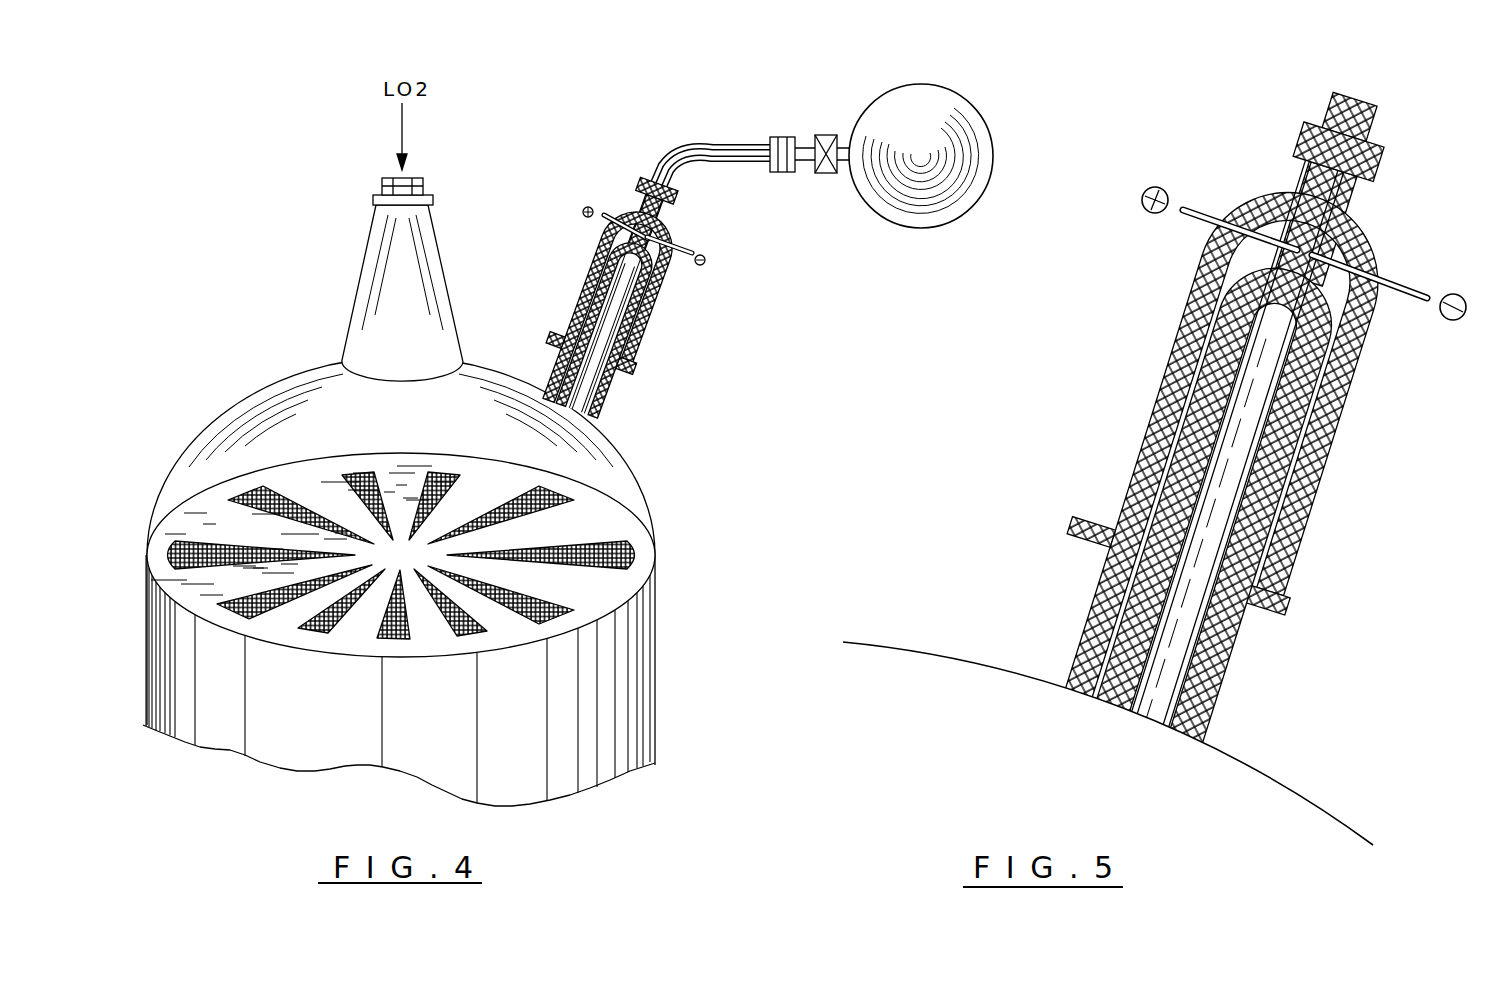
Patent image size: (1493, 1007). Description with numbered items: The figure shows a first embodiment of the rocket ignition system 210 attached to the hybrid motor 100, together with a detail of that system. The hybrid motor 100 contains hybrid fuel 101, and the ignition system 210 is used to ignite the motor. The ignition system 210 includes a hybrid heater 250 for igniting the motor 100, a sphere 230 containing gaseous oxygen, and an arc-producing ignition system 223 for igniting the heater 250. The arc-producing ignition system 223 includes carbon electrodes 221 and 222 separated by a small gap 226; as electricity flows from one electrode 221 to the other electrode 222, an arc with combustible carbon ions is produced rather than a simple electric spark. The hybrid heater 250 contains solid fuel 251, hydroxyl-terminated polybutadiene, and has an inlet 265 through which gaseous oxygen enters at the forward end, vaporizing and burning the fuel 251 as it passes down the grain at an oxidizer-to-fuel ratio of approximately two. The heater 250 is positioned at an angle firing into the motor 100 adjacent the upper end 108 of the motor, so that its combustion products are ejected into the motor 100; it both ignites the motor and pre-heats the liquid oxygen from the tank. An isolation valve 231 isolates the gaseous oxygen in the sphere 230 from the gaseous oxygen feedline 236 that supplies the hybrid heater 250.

In FIG. 4, the hybrid motor 100 is at (656, 617).
In FIG. 4, the hybrid fuel 101 is at (588, 517).
In FIG. 4, the upper end of hybrid motor 108 is at (253, 385).
In FIG. 5, the upper end of hybrid motor 108 is at (945, 652).
In FIG. 4, the ignition system 210 is at (620, 76).
In FIG. 4, the carbon electrode 221 is at (613, 214).
In FIG. 5, the carbon electrode 221 is at (1227, 175).
In FIG. 4, the carbon electrode 222 is at (690, 253).
In FIG. 5, the carbon electrode 222 is at (1395, 286).
In FIG. 4, the arc-producing ignition system 223 is at (747, 264).
In FIG. 5, the arc-producing ignition system 223 is at (1145, 306).
In FIG. 5, the gap 226 is at (1310, 240).
In FIG. 4, the sphere 230 is at (958, 92).
In FIG. 4, the isolation valve 231 is at (828, 174).
In FIG. 4, the gaseous oxygen feedline 236 is at (742, 146).
In FIG. 4, the hybrid heater 250 is at (578, 291).
In FIG. 5, the hybrid heater 250 is at (1127, 447).
In FIG. 4, the solid fuel 251 is at (603, 392).
In FIG. 5, the solid fuel 251 is at (1222, 667).
In FIG. 4, the inlet 265 is at (647, 185).
In FIG. 5, the inlet 265 is at (1300, 148).